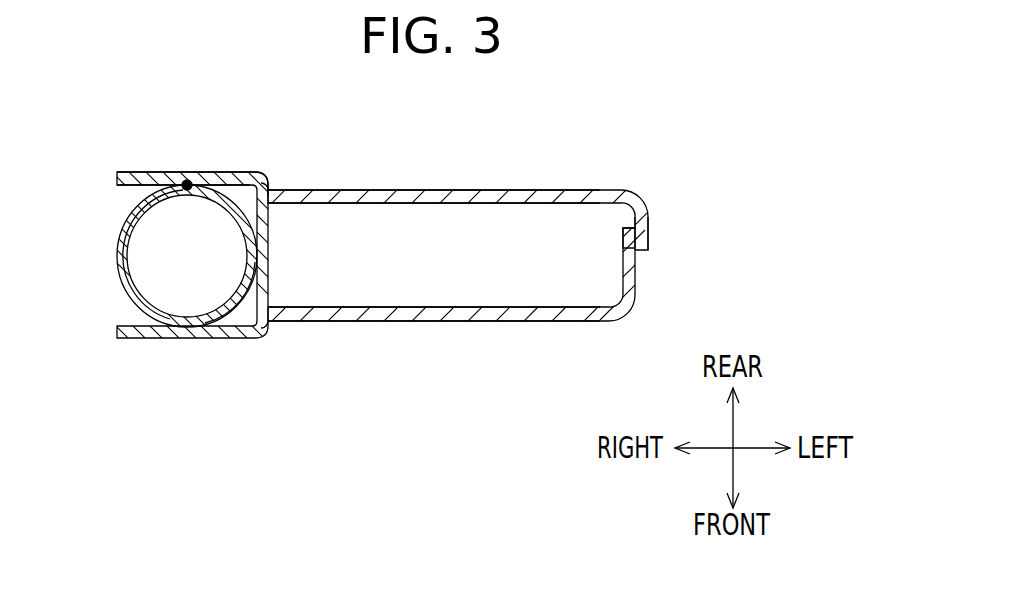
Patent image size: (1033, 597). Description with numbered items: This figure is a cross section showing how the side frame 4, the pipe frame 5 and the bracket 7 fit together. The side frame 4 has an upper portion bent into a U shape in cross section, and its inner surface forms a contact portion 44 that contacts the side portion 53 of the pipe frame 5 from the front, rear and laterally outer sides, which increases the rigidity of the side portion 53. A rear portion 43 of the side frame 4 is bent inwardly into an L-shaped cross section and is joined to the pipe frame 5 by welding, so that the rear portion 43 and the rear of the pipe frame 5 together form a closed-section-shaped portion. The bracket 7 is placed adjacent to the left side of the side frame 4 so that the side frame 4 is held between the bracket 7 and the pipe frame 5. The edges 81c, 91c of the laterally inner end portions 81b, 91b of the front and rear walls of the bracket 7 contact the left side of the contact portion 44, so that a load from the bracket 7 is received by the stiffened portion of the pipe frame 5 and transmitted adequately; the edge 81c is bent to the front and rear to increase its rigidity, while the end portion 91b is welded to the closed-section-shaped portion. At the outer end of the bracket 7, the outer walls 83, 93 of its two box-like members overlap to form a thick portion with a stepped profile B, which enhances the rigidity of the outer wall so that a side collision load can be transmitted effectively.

The side frame 4 is at (142, 145).
The rear portion 43 is at (203, 172).
The contact portion 44 is at (272, 183).
The pipe frame 5 is at (218, 267).
The side portion 53 is at (127, 295).
The bracket 7 is at (608, 140).
The laterally inner end portion 91b is at (292, 192).
The edge 91c is at (263, 185).
The laterally inner end portion 81b is at (283, 322).
The edge 81c is at (264, 330).
The outer wall 83 is at (628, 238).
The outer wall 93 is at (650, 238).
The stepped profile B is at (643, 252).